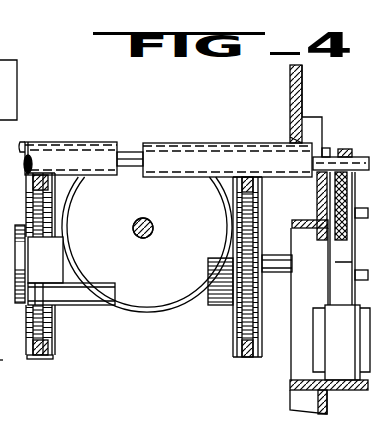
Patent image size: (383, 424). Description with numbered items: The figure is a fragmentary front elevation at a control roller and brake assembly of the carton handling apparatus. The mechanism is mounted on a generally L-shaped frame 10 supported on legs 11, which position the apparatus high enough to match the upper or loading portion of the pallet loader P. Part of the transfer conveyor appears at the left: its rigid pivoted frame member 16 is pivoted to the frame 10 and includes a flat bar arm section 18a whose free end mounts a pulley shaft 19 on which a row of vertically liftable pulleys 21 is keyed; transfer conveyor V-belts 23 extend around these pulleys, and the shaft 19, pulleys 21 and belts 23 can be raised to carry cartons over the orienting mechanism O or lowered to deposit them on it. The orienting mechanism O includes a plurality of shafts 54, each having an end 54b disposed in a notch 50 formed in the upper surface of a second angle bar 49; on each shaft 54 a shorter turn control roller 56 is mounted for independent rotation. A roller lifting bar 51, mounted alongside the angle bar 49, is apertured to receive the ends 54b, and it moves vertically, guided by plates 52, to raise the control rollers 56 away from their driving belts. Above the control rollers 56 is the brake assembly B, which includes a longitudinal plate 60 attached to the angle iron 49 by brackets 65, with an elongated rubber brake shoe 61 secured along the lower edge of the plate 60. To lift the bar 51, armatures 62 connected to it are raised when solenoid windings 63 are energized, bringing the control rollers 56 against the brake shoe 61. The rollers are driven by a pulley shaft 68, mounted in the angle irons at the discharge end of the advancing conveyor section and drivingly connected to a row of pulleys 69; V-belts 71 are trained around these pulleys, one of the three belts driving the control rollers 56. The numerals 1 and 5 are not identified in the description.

The frame 1 is at (24, 180).
The fastener 5 is at (24, 162).
The frame 10 is at (354, 149).
The legs 11 is at (318, 409).
The rigid pivoted frame member 16 is at (72, 288).
The arm section 18a is at (70, 265).
The pulley shaft 19 is at (153, 229).
The vertically liftable pulleys 21 is at (207, 227).
The transfer conveyor V-belts 23 is at (30, 142).
The second angle bar 49 is at (328, 226).
The notch 50 is at (322, 148).
The roller lifting bar 51 is at (343, 238).
The plates 52 is at (326, 202).
The shaft 54 is at (131, 168).
The other end of shaft 54b is at (322, 181).
The turn control roller 56 is at (218, 143).
The longitudinal plate 60 is at (304, 79).
The rubber brake shoe 61 is at (290, 137).
The armatures 62 is at (340, 271).
The solenoid windings 63 is at (352, 350).
The brackets 65 is at (303, 93).
The pulley shaft 68 is at (280, 274).
The pulleys 69 is at (52, 343).
The V-belts 71 is at (38, 358).
The pallet loader P is at (9, 55).
The orienting mechanism O is at (164, 134).
The brake assembly B is at (284, 129).